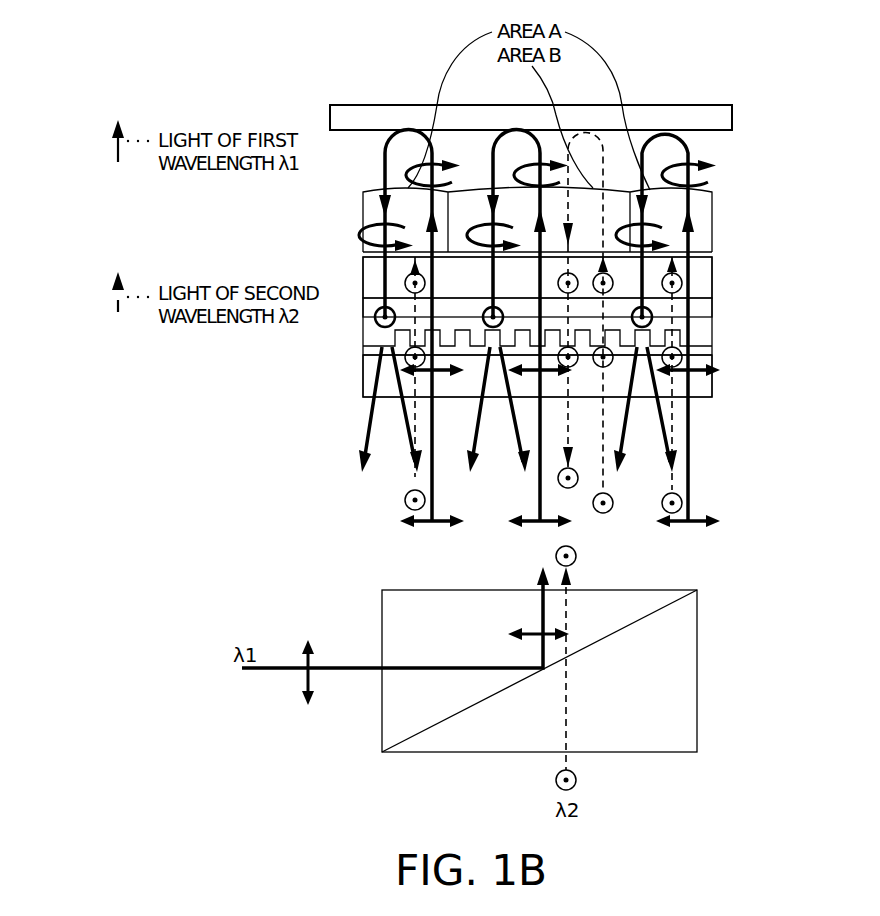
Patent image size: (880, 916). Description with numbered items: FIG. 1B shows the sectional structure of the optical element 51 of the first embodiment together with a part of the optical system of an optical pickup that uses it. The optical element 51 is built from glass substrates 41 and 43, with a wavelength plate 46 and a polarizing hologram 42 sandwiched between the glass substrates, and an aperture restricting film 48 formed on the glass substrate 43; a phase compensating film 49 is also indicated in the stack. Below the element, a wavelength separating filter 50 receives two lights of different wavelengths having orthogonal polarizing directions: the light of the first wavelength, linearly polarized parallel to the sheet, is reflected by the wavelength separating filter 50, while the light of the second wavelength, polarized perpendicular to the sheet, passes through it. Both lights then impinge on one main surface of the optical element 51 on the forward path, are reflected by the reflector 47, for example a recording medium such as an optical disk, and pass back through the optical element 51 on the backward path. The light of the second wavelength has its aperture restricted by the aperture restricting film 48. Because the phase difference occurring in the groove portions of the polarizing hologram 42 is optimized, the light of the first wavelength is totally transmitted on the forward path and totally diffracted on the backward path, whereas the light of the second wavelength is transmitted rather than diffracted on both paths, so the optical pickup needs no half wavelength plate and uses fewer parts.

The glass substrate 41 is at (708, 382).
The polarizing hologram 42 is at (721, 316).
The glass substrate 43 is at (700, 275).
The wavelength plate 46 is at (708, 307).
The reflector 47 is at (732, 108).
The aperture restricting film 48 is at (698, 248).
The phase compensating film 49 is at (600, 253).
The wavelength separating filter 50 is at (647, 615).
The optical element 51 is at (788, 247).